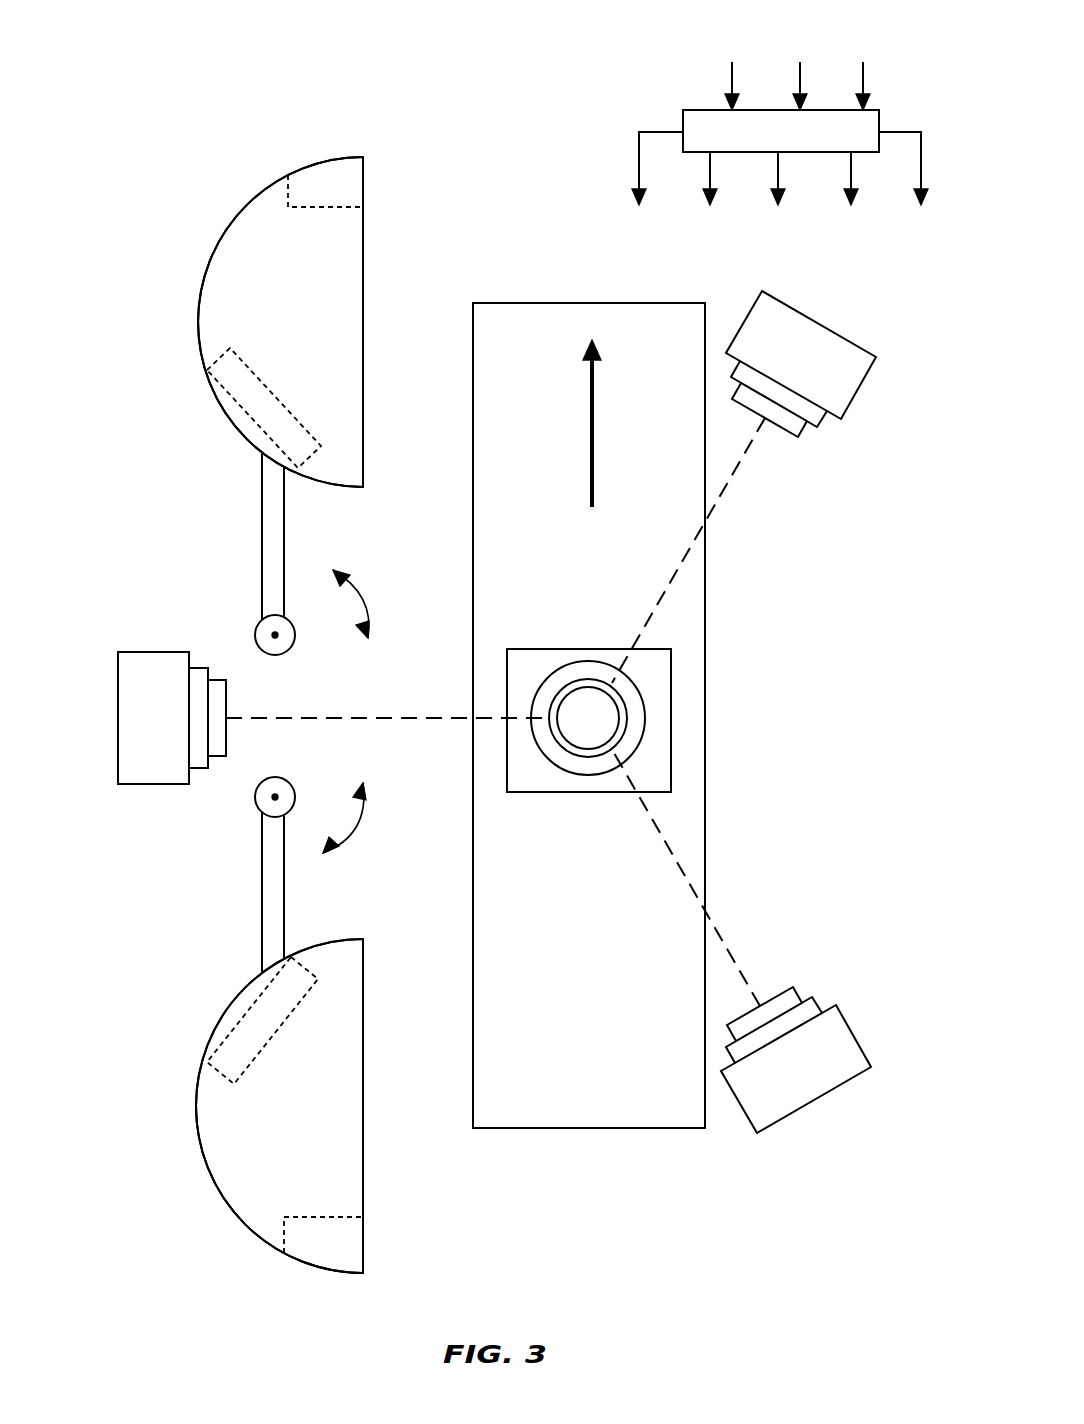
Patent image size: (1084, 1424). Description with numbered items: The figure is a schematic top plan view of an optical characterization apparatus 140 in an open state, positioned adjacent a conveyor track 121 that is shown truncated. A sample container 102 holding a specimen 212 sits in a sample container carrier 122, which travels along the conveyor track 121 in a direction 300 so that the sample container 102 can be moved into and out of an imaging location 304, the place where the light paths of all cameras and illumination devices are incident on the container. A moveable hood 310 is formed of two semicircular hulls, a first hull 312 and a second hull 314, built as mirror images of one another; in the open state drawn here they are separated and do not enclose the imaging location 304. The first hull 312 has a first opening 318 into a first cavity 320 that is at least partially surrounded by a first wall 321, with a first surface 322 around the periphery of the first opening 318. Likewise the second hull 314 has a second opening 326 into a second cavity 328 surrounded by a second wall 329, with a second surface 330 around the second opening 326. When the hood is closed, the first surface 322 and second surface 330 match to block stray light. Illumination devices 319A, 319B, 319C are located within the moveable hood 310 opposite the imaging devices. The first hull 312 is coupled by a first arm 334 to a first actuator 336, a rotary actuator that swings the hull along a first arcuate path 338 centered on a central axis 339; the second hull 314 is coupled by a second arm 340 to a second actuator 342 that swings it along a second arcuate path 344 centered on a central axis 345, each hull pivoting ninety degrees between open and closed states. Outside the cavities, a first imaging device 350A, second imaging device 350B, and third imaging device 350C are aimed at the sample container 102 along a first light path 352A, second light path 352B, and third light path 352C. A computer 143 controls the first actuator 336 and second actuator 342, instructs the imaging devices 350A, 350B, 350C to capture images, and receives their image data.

The sample container 102 is at (580, 778).
The conveyor track 121 is at (603, 1061).
The sample container carrier 122 is at (671, 750).
The optical characterization apparatus 140 is at (168, 512).
The computer 143 is at (700, 110).
The specimen 212 is at (588, 713).
The direction 300 is at (592, 440).
The imaging location 304 is at (655, 705).
The moveable hood 310 is at (258, 188).
The first hull 312 is at (204, 262).
The second hull 314 is at (205, 1052).
The first opening 318 is at (365, 310).
The illumination device 319A is at (335, 210).
The illumination device 319B is at (278, 1040).
The illumination device 319C is at (297, 372).
The first cavity 320 is at (222, 320).
The first wall 321 is at (230, 222).
The first surface 322 is at (365, 160).
The second opening 326 is at (365, 1118).
The second cavity 328 is at (222, 1128).
The second wall 329 is at (263, 1240).
The second surface 330 is at (365, 1273).
The first arm 334 is at (262, 493).
The first actuator 336 is at (258, 630).
The first arcuate path 338 is at (357, 587).
The central axis 339 is at (277, 636).
The second arm 340 is at (262, 884).
The second actuator 342 is at (257, 808).
The second arcuate path 344 is at (355, 827).
The central axis 345 is at (277, 794).
The first imaging device 350A is at (182, 731).
The second imaging device 350B is at (829, 364).
The third imaging device 350C is at (834, 1061).
The first light path 352A is at (418, 716).
The second light path 352B is at (728, 490).
The third light path 352C is at (740, 950).